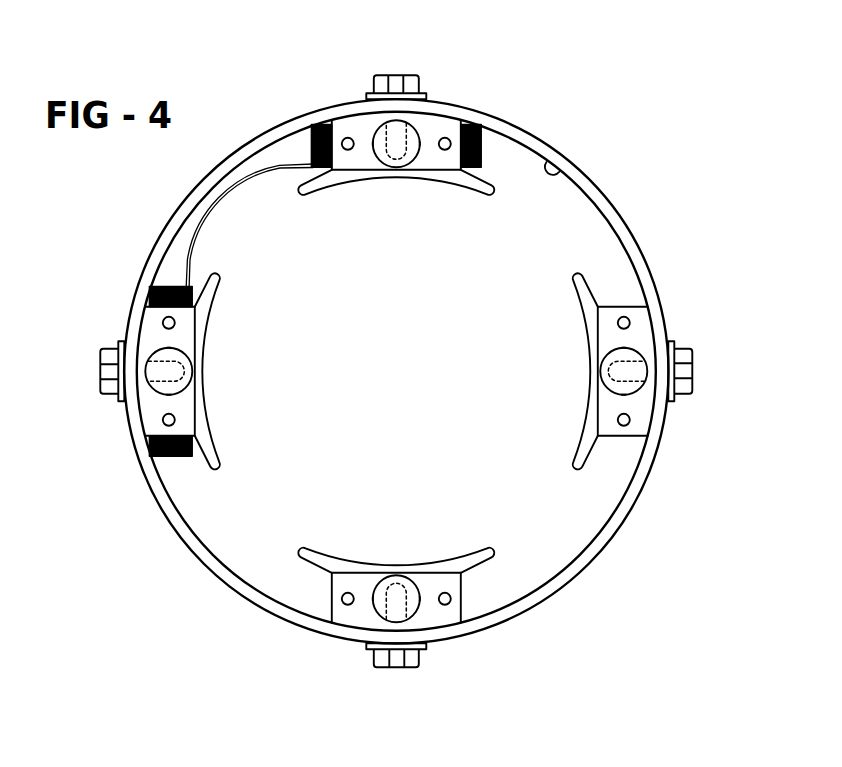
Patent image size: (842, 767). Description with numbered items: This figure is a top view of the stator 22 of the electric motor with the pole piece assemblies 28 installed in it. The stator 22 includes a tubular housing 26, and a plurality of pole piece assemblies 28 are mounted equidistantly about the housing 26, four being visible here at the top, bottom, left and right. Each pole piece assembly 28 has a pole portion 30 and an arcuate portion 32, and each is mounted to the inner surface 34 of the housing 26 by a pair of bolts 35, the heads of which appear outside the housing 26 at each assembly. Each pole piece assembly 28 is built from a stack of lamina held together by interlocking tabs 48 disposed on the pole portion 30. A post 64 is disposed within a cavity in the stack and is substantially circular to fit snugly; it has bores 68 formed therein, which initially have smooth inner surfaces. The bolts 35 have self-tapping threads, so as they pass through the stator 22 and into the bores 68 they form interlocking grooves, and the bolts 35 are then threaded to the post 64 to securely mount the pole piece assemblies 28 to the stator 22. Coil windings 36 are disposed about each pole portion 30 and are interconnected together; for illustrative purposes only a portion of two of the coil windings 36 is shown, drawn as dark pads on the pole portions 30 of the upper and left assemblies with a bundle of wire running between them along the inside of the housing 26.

The stator 22 is at (409, 371).
The tubular housing 26 is at (580, 562).
The pole piece assembly 28 is at (446, 365).
The pole portion 30 is at (432, 126).
The arcuate portion 32 is at (462, 184).
The inner surface 34 is at (560, 169).
The bolt 35 is at (400, 82).
The coil winding 36 is at (490, 138).
The interlocking tab 48 is at (633, 322).
The post 64 is at (406, 163).
The bore 68 is at (632, 362).